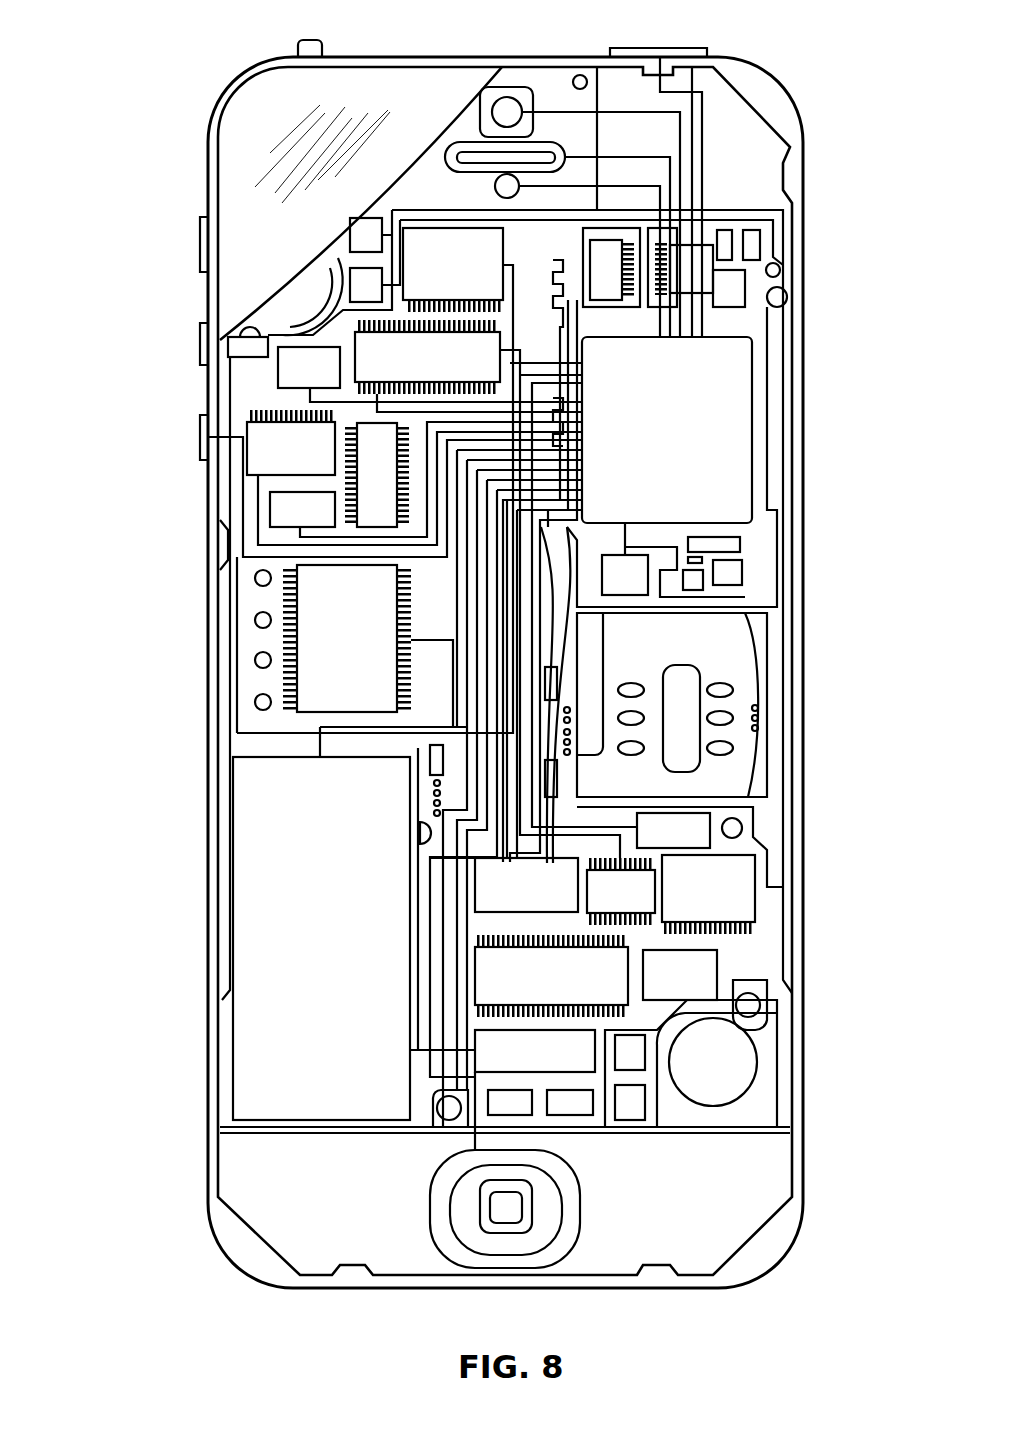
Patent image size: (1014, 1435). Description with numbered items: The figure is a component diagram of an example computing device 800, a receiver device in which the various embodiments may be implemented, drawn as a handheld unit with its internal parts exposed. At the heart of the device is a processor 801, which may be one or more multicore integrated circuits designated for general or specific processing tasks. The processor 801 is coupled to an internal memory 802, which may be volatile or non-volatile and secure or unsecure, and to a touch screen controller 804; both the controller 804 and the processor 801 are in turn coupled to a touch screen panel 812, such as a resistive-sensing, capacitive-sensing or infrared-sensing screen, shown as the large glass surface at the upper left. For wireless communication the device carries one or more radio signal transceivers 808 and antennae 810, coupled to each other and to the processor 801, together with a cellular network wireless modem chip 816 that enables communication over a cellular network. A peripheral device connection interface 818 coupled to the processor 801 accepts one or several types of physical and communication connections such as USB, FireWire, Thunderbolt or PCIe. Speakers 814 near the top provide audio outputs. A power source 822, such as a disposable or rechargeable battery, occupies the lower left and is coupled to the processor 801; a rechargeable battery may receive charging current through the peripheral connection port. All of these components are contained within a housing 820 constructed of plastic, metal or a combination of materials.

The computing device 800 is at (150, 84).
The processor 801 is at (667, 430).
The internal memory 802 is at (487, 592).
The touch screen controller 804 is at (375, 480).
The radio signal transceivers 808 is at (703, 247).
The antennae 810 is at (745, 290).
The touch screen panel 812 is at (240, 203).
The speakers 814 is at (462, 145).
The cellular network wireless modem chip 816 is at (551, 976).
The peripheral device connection interface 818 is at (535, 1051).
The housing 820 is at (805, 1102).
The power source 822 is at (321, 938).